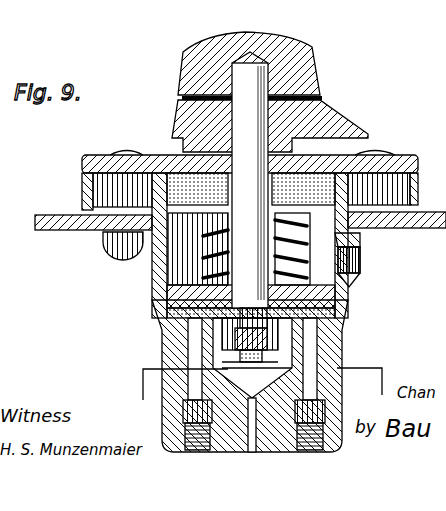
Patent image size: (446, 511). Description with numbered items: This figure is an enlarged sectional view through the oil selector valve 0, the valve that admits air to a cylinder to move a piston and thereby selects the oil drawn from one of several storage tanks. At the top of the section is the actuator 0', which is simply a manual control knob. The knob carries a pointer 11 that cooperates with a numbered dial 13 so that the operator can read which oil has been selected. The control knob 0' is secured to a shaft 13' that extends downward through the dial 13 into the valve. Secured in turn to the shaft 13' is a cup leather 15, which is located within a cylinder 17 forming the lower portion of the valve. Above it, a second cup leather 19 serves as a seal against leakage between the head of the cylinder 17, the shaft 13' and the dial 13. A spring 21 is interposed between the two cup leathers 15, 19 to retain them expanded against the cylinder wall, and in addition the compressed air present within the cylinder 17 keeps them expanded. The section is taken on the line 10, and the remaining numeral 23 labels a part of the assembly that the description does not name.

The actuator 0' is at (262, 65).
The pointer 11 is at (347, 125).
The numbered dial 13 is at (240, 302).
The shaft 13' is at (250, 190).
The cup leather 19 is at (300, 232).
The spring 21 is at (338, 255).
The packing 23 is at (300, 290).
The cylinder 17 is at (362, 237).
The selector valve 0 is at (361, 259).
The cup leather 15 is at (327, 307).
The section line 10 is at (261, 373).